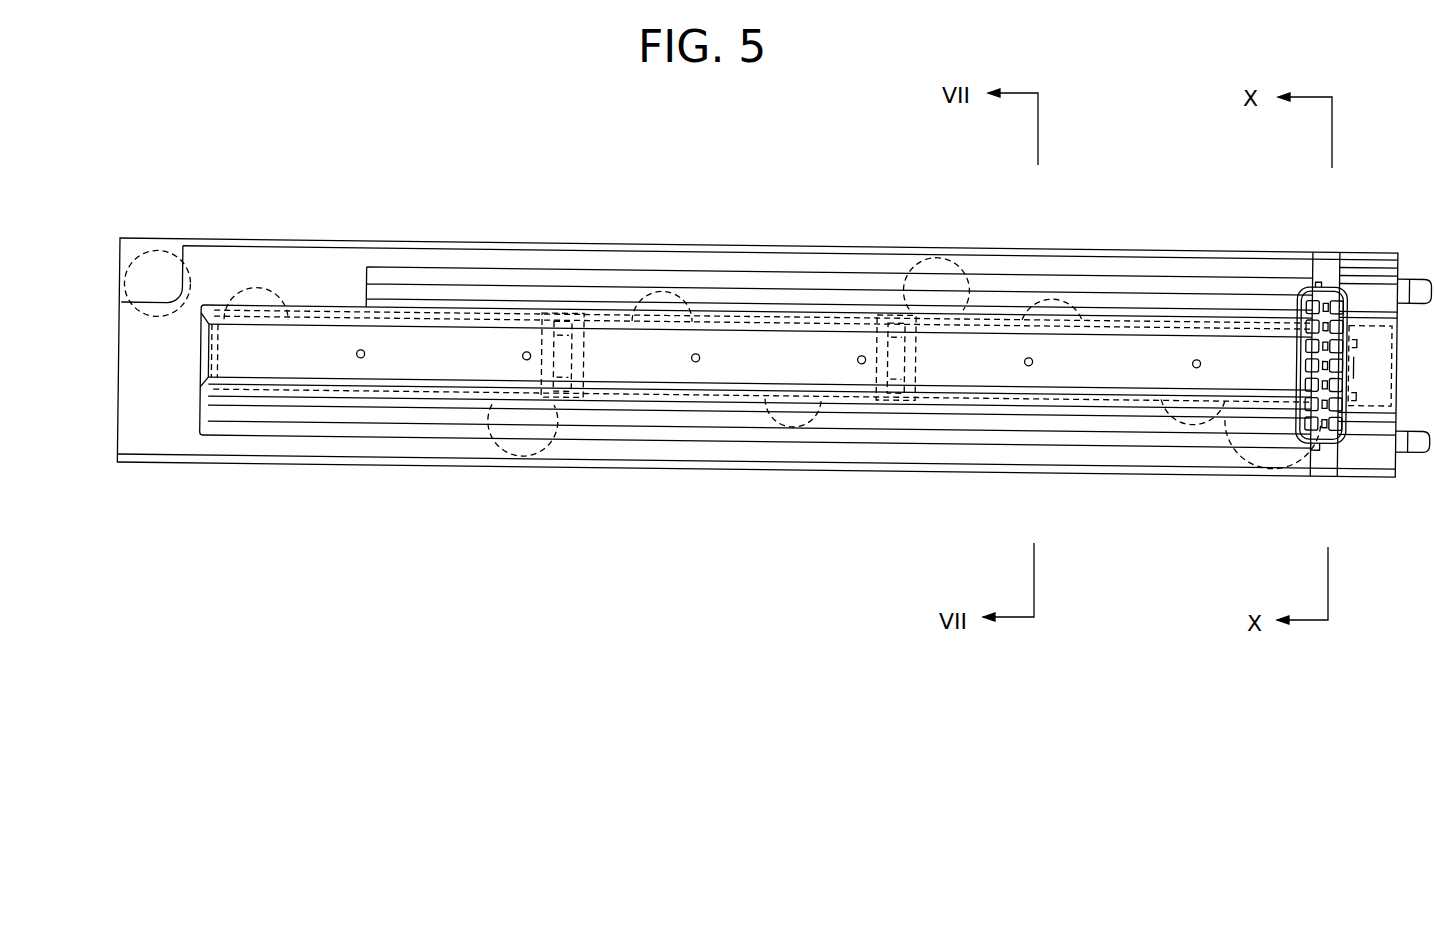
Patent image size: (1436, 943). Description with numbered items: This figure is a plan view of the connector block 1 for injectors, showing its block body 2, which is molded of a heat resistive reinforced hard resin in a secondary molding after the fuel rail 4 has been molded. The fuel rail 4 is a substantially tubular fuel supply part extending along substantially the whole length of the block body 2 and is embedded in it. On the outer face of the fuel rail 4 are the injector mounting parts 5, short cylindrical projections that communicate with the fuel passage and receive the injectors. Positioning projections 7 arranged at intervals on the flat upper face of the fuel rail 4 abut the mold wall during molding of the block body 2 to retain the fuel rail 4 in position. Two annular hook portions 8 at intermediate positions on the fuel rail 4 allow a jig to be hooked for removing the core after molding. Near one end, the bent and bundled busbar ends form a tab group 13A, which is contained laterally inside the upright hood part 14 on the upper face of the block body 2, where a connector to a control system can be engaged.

The connector block 1 is at (719, 180).
The block body 2 is at (157, 432).
The fuel rail 4 is at (333, 312).
The injector mounting parts 5 is at (428, 398).
The positioning projections 7 is at (362, 358).
The hook portions 8 is at (586, 398).
The tab group 13A is at (1314, 305).
The hood part 14 is at (1340, 443).